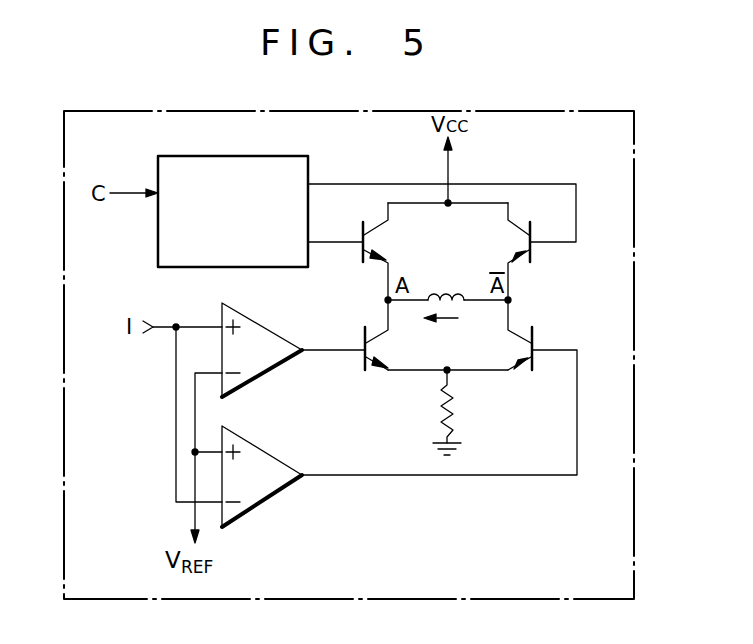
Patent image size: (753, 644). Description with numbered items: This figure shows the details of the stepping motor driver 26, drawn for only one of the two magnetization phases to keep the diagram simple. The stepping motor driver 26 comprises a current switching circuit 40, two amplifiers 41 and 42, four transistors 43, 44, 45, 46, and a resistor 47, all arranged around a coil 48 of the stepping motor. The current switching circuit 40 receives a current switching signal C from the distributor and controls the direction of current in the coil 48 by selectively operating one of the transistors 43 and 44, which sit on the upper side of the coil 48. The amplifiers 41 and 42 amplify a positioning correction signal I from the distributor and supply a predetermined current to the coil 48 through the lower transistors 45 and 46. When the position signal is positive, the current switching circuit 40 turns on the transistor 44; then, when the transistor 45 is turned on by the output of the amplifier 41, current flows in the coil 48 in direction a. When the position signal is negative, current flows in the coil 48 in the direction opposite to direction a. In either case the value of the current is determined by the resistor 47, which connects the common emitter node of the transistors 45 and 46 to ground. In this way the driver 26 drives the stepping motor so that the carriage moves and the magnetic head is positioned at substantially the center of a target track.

The stepping motor driver 26 is at (594, 110).
The current switching circuit 40 is at (202, 168).
The amplifier 41 is at (280, 358).
The amplifier 42 is at (276, 484).
The transistor 43 is at (360, 230).
The transistor 44 is at (538, 230).
The transistor 45 is at (376, 374).
The transistor 46 is at (526, 374).
The resistor 47 is at (452, 416).
The coil 48 is at (456, 303).